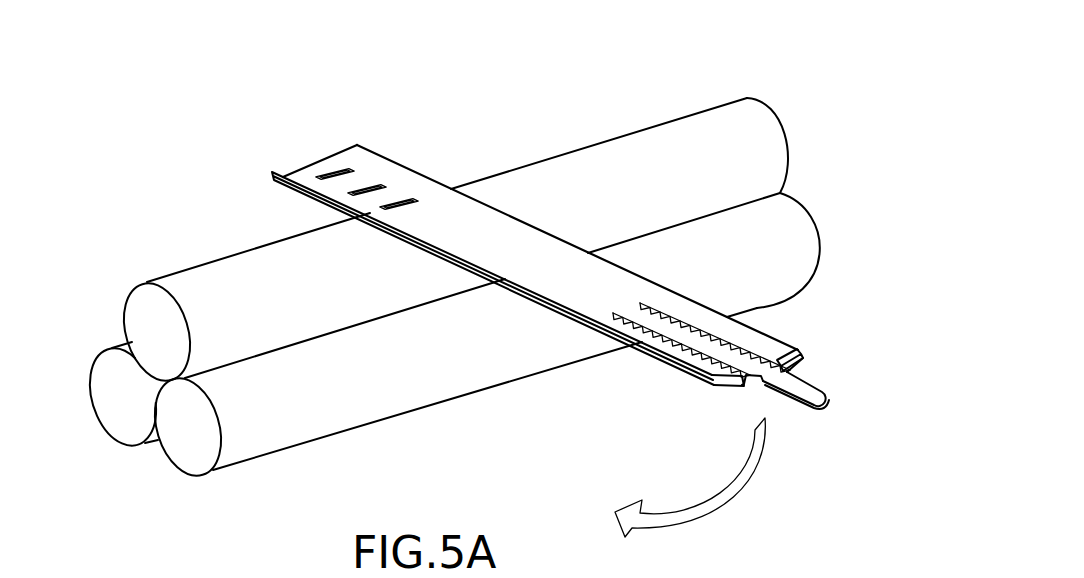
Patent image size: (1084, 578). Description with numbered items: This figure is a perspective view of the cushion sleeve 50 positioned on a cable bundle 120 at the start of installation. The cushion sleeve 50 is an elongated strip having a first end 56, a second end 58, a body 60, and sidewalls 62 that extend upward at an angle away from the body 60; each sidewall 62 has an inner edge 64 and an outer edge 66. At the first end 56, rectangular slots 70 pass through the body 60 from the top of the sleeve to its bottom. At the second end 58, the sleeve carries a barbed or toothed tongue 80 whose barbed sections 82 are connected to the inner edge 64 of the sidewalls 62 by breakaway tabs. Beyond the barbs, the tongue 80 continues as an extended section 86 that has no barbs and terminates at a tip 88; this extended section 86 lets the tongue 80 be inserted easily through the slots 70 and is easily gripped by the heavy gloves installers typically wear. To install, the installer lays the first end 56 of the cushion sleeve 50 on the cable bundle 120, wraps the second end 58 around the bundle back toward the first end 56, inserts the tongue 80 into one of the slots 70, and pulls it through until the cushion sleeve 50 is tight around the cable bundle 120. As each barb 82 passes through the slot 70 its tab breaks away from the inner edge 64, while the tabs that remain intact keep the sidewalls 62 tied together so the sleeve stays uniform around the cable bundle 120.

The cushion sleeve 50 is at (529, 288).
The first end 56 is at (321, 167).
The second end 58 is at (801, 346).
The body 60 is at (601, 297).
The sidewalls 62 is at (464, 207).
The inner edge 64 is at (665, 307).
The outer edge 66 is at (712, 307).
The slots 70 is at (342, 207).
The tongue 80 is at (760, 332).
The barbed sections 82 is at (738, 318).
The extended section 86 is at (810, 388).
The tip 88 is at (828, 406).
The cable bundle 120 is at (642, 157).